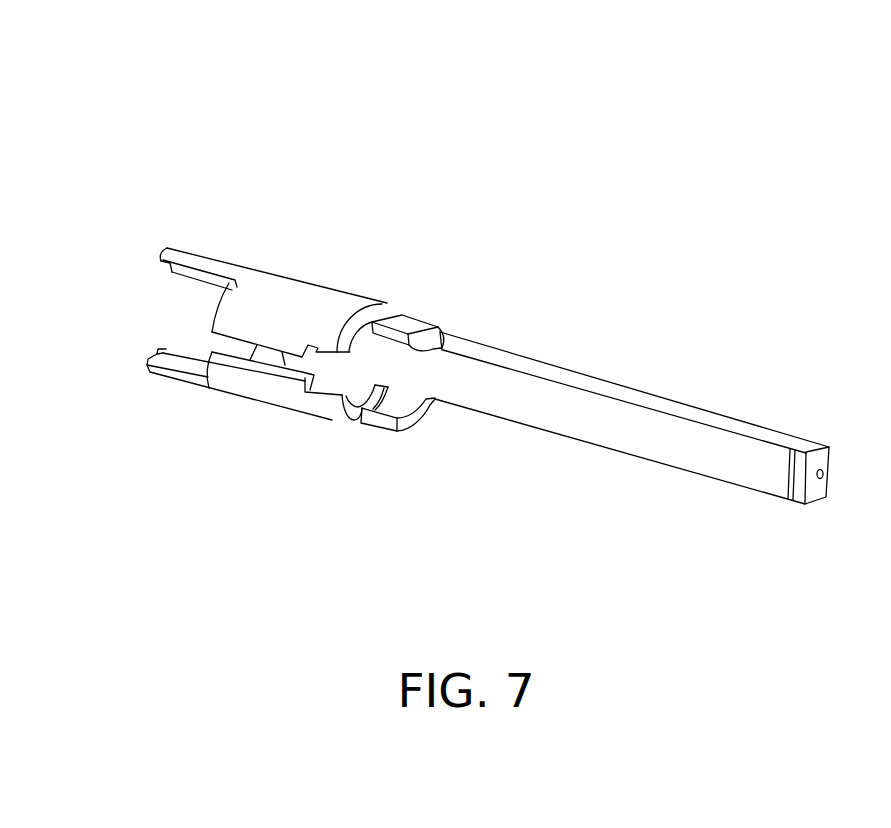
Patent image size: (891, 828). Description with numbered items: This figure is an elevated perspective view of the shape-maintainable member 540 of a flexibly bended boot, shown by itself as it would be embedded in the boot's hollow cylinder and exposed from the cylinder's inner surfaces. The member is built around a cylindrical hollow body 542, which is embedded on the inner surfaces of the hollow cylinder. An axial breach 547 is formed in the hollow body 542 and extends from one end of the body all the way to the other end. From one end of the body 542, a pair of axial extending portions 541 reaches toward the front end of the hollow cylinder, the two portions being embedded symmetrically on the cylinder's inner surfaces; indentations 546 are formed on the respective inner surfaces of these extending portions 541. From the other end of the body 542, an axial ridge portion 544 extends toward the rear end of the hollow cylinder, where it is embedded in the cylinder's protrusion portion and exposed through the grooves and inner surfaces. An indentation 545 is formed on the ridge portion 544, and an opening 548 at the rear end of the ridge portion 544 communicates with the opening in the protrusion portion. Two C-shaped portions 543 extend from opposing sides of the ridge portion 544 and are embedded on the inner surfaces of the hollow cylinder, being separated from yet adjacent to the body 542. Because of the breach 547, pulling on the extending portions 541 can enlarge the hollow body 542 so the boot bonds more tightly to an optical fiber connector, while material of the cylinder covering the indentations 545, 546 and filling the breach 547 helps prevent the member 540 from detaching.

The shape-maintainable member 540 is at (263, 117).
The axial extending portions 541 is at (193, 257).
The cylindrical hollow body 542 is at (285, 293).
The C-shaped portions 543 is at (397, 324).
The axial ridge portion 544 is at (593, 410).
The indentation 545 is at (801, 489).
The indentations 546 is at (171, 273).
The axial breach 547 is at (237, 340).
The opening 548 is at (823, 448).